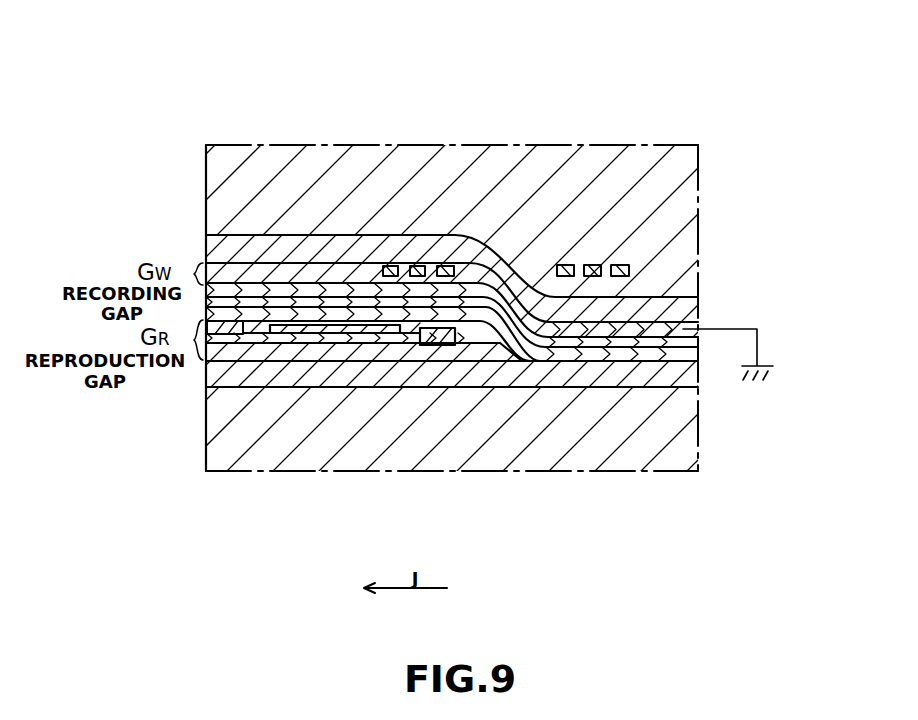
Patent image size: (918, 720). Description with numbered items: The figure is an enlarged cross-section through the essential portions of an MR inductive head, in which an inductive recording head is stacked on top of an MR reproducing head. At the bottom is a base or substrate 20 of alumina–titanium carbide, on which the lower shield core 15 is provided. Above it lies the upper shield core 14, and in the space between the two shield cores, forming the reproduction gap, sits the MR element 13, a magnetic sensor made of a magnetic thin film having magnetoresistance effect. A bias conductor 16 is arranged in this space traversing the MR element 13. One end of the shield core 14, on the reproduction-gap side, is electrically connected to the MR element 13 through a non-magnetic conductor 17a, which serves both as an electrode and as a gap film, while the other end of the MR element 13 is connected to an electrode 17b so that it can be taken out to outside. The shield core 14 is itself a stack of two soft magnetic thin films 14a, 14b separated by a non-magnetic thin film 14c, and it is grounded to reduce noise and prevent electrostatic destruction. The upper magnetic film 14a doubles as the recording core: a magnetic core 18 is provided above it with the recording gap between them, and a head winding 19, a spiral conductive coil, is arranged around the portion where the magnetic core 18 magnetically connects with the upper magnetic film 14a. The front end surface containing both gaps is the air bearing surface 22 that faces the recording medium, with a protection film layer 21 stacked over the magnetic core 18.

The MR element 13 is at (432, 335).
The upper shield core 14 is at (478, 193).
The upper magnetic film 14a is at (316, 290).
The magnetic film 14b is at (360, 310).
The non-magnetic thin film 14c is at (338, 303).
The lower shield core 15 is at (665, 390).
The bias conductor 16 is at (352, 322).
The non-magnetic conductor 17a is at (217, 340).
The electrode 17b is at (450, 342).
The magnetic core 18 is at (228, 237).
The head winding 19 is at (565, 266).
The substrate 20 is at (697, 420).
The magnetic core 21 is at (690, 165).
The air bearing surface 22 is at (206, 450).